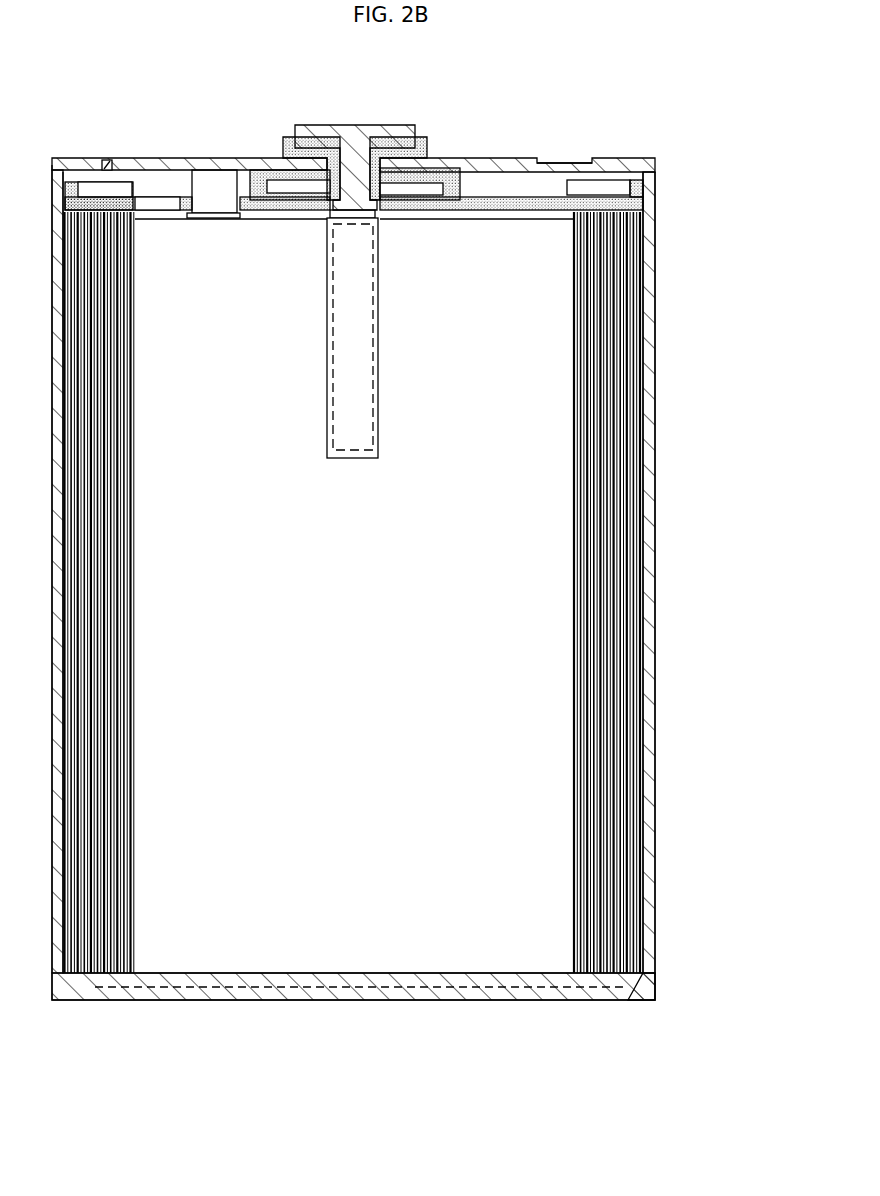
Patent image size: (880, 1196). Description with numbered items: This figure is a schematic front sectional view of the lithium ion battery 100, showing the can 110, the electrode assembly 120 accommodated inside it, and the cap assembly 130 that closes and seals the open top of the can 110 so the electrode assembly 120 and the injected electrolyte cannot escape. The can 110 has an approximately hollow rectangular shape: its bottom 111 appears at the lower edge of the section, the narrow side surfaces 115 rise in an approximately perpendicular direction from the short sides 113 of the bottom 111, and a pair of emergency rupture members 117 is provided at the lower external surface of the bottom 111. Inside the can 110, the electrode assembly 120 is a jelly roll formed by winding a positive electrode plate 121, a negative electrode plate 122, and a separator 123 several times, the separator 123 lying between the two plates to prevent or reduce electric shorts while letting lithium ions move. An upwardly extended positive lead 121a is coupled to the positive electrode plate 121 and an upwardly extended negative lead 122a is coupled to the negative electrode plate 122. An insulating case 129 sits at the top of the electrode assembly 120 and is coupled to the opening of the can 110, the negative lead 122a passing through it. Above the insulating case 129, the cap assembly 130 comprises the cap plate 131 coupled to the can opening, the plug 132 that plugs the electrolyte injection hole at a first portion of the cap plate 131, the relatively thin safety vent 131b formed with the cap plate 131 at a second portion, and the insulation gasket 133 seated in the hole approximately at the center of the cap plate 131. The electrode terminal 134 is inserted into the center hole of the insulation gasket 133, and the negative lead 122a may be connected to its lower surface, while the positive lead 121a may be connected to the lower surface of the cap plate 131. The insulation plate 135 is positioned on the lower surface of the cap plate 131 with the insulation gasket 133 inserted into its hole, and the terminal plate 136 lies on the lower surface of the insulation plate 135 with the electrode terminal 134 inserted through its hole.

The lithium ion battery 100 is at (53, 70).
The can 110 is at (648, 617).
The bottom 111 is at (619, 999).
The short sides 113 is at (653, 993).
The narrow side surfaces 115 is at (648, 822).
The emergency rupture members 117 is at (487, 999).
The electrode assembly 120 is at (420, 541).
The positive electrode plate 121 is at (640, 355).
The positive lead 121a is at (224, 183).
The negative electrode plate 122 is at (636, 410).
The negative lead 122a is at (325, 215).
The separator 123 is at (645, 371).
The insulating case 129 is at (657, 197).
The cap assembly 130 is at (628, 160).
The cap plate 131 is at (150, 158).
The safety vent 131b is at (563, 162).
The plug 132 is at (106, 160).
The insulation gasket 133 is at (418, 140).
The electrode terminal 134 is at (352, 126).
The insulation plate 135 is at (457, 190).
The terminal plate 136 is at (411, 200).